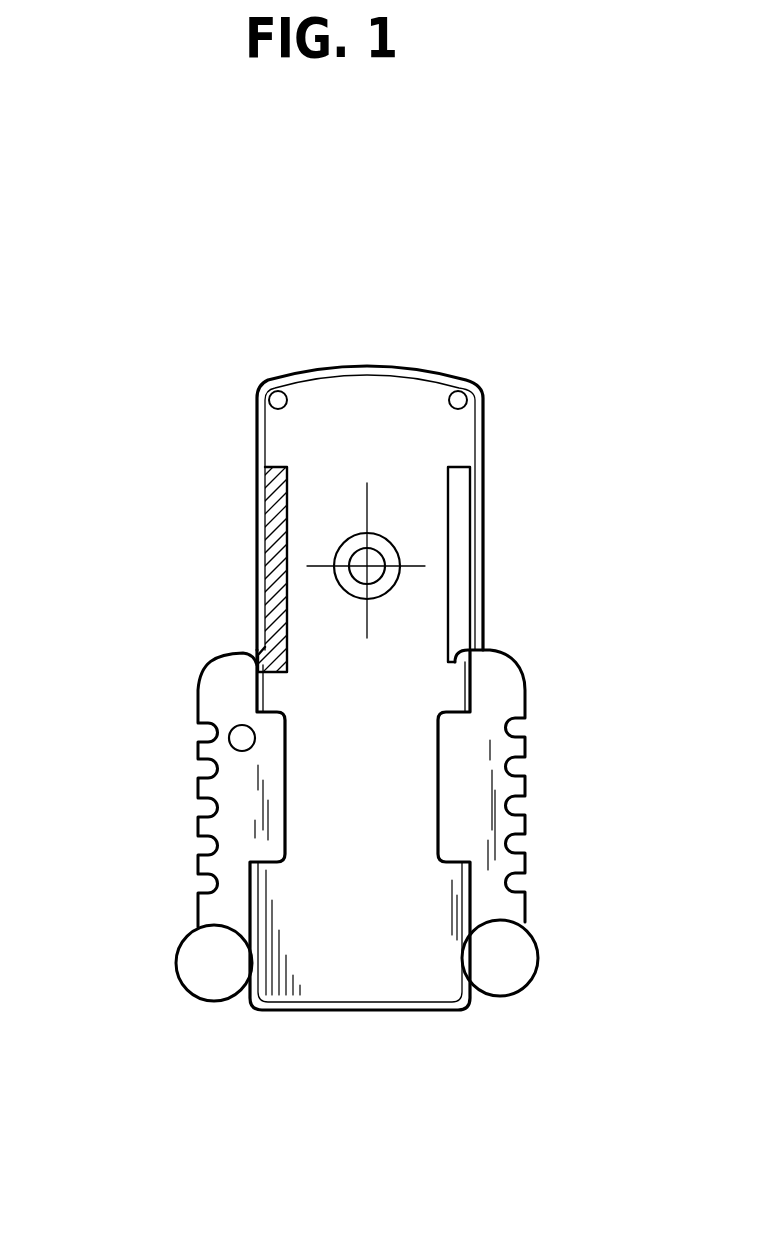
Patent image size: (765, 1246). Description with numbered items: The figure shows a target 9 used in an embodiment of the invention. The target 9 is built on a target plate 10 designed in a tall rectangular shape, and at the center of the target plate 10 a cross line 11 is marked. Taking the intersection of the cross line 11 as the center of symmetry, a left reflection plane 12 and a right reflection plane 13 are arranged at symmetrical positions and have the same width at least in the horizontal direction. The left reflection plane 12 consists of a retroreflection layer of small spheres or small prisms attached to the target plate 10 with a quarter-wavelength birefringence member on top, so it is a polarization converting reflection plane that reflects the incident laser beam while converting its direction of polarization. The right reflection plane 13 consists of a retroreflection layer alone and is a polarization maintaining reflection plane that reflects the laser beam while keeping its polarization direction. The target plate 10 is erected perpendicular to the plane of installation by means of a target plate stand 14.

The target 9 is at (525, 405).
The target plate 10 is at (399, 968).
The cross line 11 is at (367, 503).
The left reflection plane 12 is at (265, 567).
The right reflection plane 13 is at (463, 558).
The target plate stand 14 is at (193, 823).